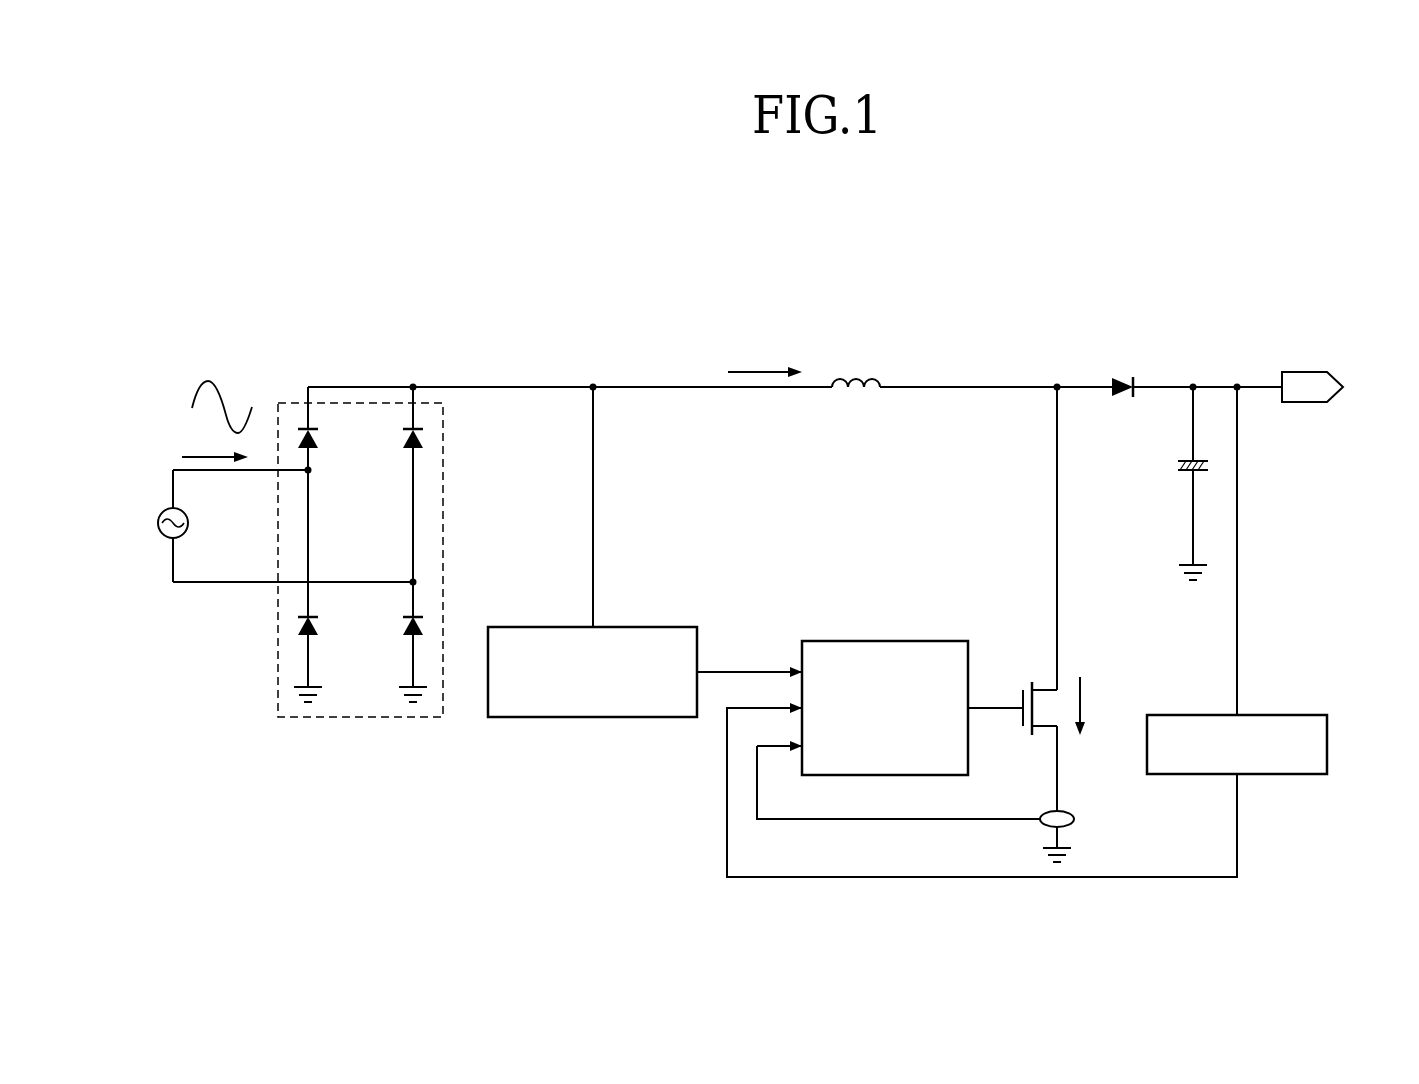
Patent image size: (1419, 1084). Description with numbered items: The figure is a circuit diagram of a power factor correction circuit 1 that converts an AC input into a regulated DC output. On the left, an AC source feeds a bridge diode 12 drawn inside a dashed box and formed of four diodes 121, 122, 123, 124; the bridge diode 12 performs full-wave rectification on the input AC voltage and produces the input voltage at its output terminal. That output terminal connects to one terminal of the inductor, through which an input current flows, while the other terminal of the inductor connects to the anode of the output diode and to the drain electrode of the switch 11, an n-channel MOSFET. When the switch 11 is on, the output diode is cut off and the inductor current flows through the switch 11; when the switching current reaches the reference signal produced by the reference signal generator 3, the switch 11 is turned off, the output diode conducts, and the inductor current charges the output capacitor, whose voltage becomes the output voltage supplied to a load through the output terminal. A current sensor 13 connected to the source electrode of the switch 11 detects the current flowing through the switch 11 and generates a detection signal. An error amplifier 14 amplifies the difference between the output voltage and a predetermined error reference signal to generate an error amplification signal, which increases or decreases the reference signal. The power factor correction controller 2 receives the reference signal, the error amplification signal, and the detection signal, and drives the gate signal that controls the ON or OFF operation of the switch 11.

The power factor correction circuit 1 is at (1190, 314).
The power factor correction controller 2 is at (885, 641).
The reference signal generator 3 is at (592, 717).
The switch 11 is at (1028, 665).
The bridge diode 12 is at (443, 520).
The current sensor 13 is at (1074, 818).
The error amplifier 14 is at (1327, 747).
The diode 121 is at (318, 622).
The diode 122 is at (318, 435).
The diode 123 is at (423, 619).
The diode 124 is at (423, 434).